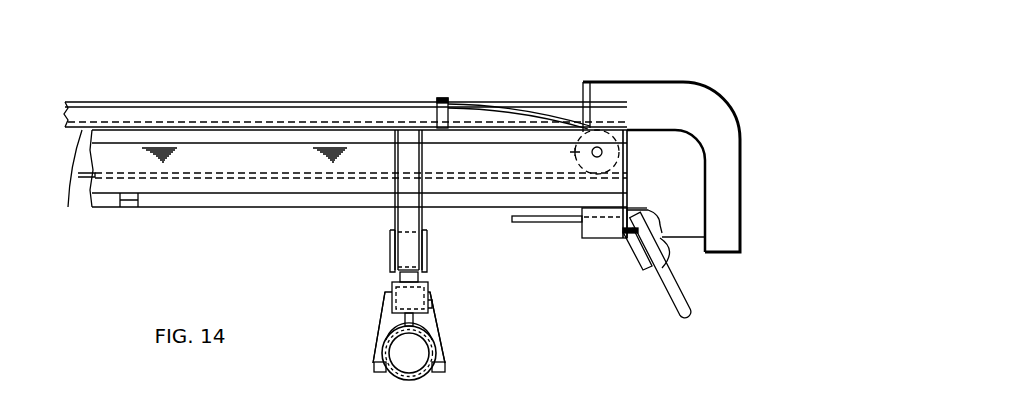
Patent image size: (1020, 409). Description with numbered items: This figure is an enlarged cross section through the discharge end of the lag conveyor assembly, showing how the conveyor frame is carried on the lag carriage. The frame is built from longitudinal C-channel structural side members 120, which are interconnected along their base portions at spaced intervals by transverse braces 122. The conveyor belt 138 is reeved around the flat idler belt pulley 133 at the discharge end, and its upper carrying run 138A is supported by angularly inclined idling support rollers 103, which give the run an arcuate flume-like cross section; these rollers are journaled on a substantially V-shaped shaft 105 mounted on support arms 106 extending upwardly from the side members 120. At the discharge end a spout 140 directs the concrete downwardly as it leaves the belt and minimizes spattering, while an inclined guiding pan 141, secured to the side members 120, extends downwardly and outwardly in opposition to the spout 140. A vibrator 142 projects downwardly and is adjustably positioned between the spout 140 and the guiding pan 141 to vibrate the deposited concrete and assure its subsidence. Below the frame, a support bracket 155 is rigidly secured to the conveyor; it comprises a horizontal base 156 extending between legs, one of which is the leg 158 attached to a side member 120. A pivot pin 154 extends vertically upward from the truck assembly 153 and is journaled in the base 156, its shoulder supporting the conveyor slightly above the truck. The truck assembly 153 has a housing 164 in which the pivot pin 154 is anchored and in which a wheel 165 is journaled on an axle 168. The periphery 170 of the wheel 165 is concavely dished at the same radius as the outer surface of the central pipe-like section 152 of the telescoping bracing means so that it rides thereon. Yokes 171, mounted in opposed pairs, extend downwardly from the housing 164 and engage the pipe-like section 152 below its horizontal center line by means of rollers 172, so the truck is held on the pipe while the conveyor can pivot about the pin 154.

The upper carrying run 138A is at (253, 102).
The longitudinal C-channel structural side member 120 is at (320, 185).
The conveyor belt 138 is at (62, 183).
The transverse brace 122 is at (117, 203).
The support arm 106 is at (437, 115).
The V-shaped shaft 105 is at (470, 80).
The idling support roller 103 is at (458, 104).
The idler belt pulley 133 is at (570, 152).
The spout 140 is at (718, 115).
The guiding pan 141 is at (642, 258).
The vibrator 142 is at (684, 300).
The leg 158 is at (405, 196).
The support bracket 155 is at (386, 230).
The horizontal base 156 is at (390, 256).
The pivot pin 154 is at (418, 278).
The housing 164 is at (396, 293).
The axle 168 is at (431, 305).
The truck assembly 153 is at (458, 311).
The wheel 165 is at (413, 318).
The periphery 170 is at (395, 326).
The yoke 171 is at (381, 333).
The roller 172 is at (378, 367).
The central pipe-like section 152 is at (410, 381).